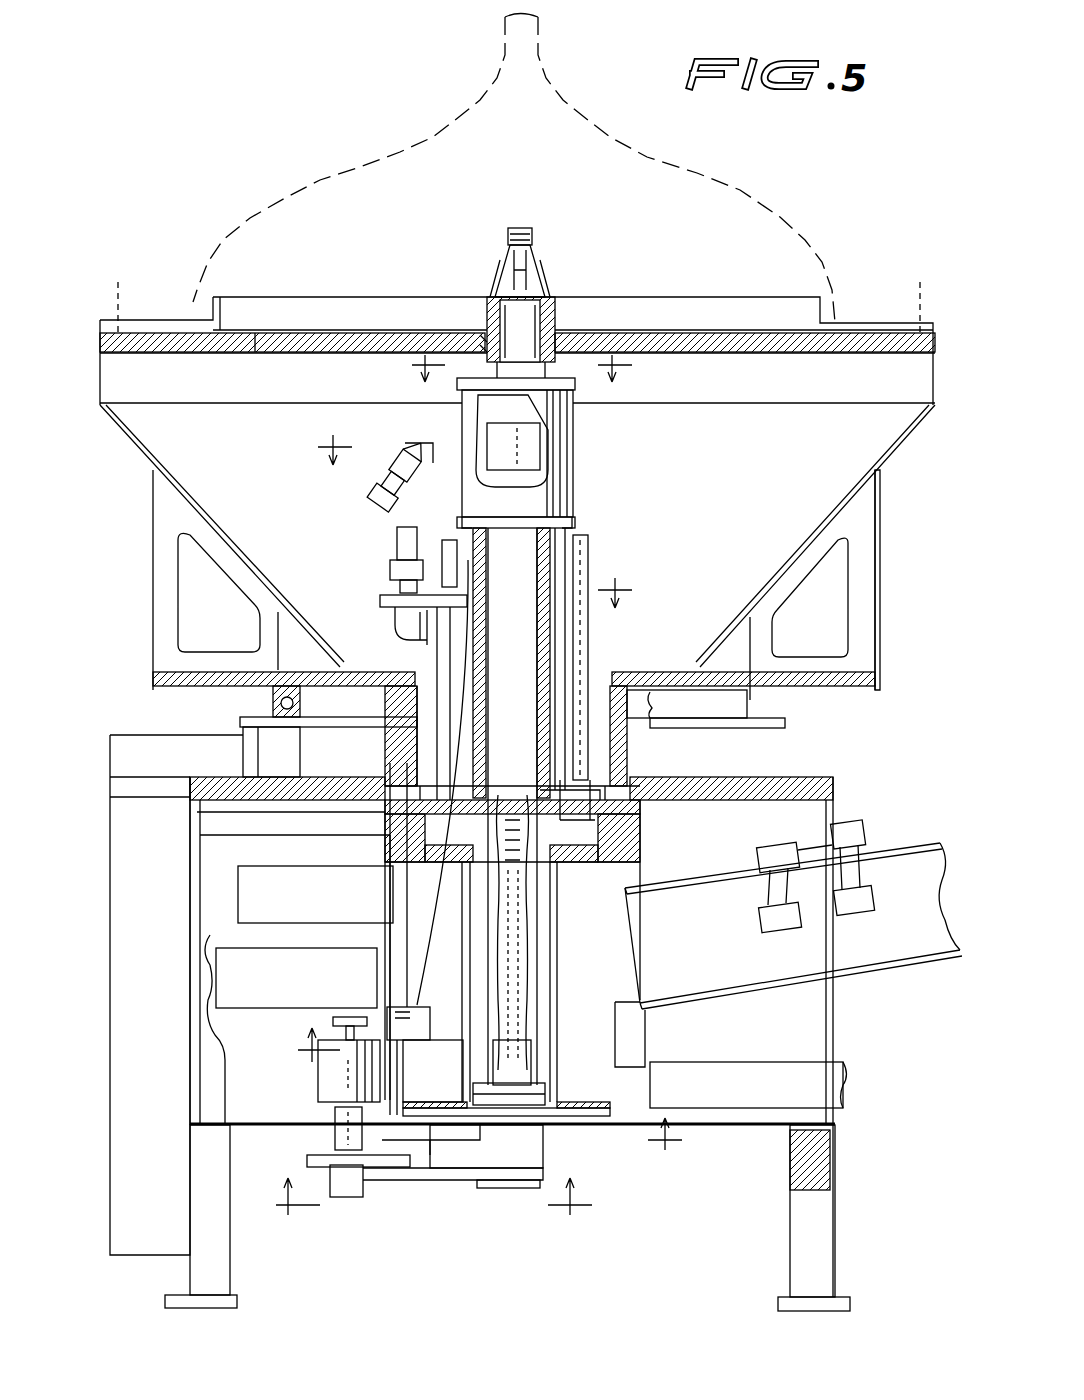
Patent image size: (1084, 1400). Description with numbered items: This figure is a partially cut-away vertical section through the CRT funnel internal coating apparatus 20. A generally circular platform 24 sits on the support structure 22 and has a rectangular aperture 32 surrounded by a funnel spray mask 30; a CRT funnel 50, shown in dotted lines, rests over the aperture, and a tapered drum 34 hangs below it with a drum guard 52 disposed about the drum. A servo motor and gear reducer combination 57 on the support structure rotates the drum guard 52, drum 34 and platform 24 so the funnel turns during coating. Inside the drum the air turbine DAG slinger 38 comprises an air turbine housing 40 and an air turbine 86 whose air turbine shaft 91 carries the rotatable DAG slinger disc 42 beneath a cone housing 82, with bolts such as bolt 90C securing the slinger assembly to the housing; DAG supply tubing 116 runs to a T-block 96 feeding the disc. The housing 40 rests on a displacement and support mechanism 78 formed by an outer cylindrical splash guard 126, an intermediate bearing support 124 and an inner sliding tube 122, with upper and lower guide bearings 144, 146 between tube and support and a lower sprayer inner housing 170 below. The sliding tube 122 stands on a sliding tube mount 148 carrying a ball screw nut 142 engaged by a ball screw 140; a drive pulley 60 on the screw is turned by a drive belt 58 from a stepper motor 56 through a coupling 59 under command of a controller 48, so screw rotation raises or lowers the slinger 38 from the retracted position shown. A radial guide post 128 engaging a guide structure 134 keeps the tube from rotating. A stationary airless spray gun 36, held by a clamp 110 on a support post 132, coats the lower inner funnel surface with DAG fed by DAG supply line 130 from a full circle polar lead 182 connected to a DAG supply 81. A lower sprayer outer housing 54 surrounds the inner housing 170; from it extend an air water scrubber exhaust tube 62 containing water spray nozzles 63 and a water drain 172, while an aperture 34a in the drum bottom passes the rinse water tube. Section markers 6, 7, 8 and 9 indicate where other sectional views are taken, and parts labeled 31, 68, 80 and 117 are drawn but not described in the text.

The CRT funnel internal coating apparatus 20 is at (838, 195).
The support structure 22 is at (104, 1022).
The platform 24 is at (170, 332).
The funnel spray mask 30 is at (228, 300).
The plate edge 31 is at (118, 290).
The aperture 32 is at (258, 352).
The tapered drum 34 is at (150, 460).
The aperture in tapered drum 34a is at (435, 665).
The stationary airless spray gun 36 is at (385, 490).
The air turbine DAG slinger 38 is at (518, 263).
The air turbine housing 40 is at (575, 425).
The DAG slinger disc 42 is at (518, 228).
The controller 48 is at (291, 1030).
The CRT funnel 50 is at (305, 180).
The drum guard 52 is at (882, 545).
The lower sprayer outer housing 54 is at (622, 1028).
The stepper motor 56 is at (315, 1080).
The servo motor and gear reducer combination 57 is at (176, 995).
The drive belt 58 is at (418, 1178).
The coupling 59 is at (330, 1135).
The drive pulley 60 is at (497, 1190).
The air water scrubber exhaust tube 62 is at (882, 993).
The water spray nozzles 63 is at (835, 912).
The bearing housing 68 is at (628, 828).
The displacement and support mechanism 78 is at (595, 655).
The mandrel cap 80 is at (508, 236).
The DAG supply 81 is at (315, 894).
The cone housing 82 is at (538, 275).
The air turbine 86 is at (540, 450).
The bolt 90C is at (573, 392).
The air turbine shaft 91 is at (492, 300).
The T-block 96 is at (462, 385).
The clamp 110 is at (395, 568).
The DAG supply tubing 116 is at (476, 345).
The cone wall 117 is at (500, 265).
The inner sliding tube 122 is at (552, 630).
The intermediate bearing support 124 is at (553, 680).
The outer cylindrical splash guard 126 is at (565, 555).
The radial guide post 128 is at (590, 575).
The DAG supply line 130 is at (440, 930).
The support post 132 is at (440, 535).
The guide structure 134 is at (615, 775).
The ball screw 140 is at (510, 800).
The ball screw nut 142 is at (520, 1050).
The upper guide bearing 144 is at (520, 548).
The lower guide bearing 146 is at (535, 870).
The sliding tube mount 148 is at (540, 1088).
The lower sprayer inner housing 170 is at (558, 930).
The water drain 172 is at (710, 1060).
The full circle polar lead 182 is at (418, 1040).
The section line 6- 6 is at (516, 373).
The section line 7- 7 is at (472, 524).
The section line 8- 8 is at (484, 1098).
The section line 9- 9 is at (427, 1204).